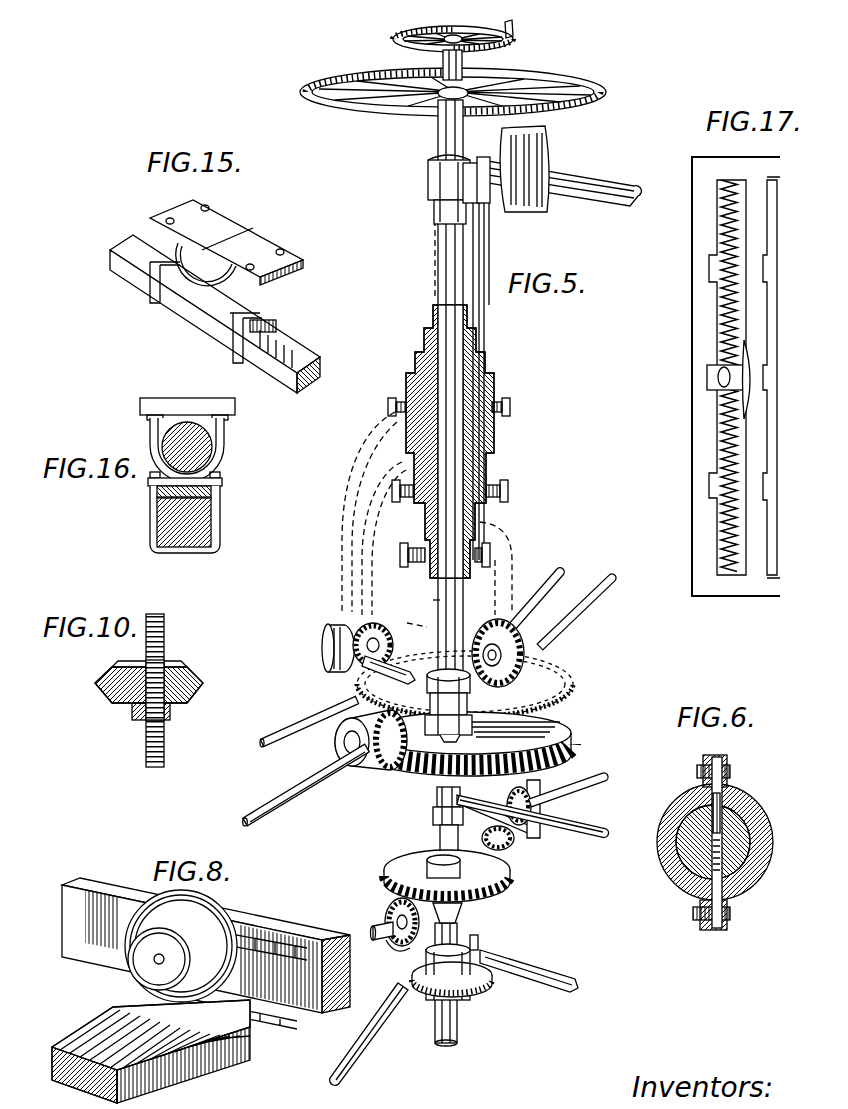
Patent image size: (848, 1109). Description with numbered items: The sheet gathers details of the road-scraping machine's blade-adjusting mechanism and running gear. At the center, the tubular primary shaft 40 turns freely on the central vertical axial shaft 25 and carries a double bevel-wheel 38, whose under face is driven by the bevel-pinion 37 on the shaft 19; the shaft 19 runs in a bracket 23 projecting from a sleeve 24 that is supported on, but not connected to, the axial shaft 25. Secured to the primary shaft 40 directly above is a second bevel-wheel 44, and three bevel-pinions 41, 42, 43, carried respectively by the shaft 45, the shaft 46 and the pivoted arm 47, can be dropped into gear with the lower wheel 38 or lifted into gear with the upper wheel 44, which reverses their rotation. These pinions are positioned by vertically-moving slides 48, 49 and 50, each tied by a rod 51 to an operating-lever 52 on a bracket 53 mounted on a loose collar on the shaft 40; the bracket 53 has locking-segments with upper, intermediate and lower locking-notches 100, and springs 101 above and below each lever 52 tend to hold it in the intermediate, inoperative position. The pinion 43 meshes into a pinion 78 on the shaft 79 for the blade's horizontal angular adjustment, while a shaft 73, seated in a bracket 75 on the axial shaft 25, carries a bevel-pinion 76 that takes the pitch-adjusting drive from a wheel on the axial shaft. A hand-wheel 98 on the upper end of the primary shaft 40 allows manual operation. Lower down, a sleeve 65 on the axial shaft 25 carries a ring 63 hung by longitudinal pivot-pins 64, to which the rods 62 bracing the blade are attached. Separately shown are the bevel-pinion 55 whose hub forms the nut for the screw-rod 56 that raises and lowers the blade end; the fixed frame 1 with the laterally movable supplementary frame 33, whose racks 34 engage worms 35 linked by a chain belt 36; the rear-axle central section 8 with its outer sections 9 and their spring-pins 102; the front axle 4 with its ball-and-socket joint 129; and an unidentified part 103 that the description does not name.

In FIG. 5, the hand-wheel 98 is at (405, 36).
In FIG. 5, the operating-lever 52 is at (463, 66).
In FIG. 5, the primary shaft 40 is at (443, 133).
In FIG. 5, the bracket 53 is at (488, 200).
In FIG. 17, the bracket 53 is at (736, 376).
In FIG. 5, the locking-notches 100 is at (540, 138).
In FIG. 17, the locking-notches 100 is at (709, 267).
In FIG. 5, the rod 51 is at (474, 262).
In FIG. 5, the vertically-moving slide 48 is at (490, 412).
In FIG. 5, the vertically-moving slide 50 is at (490, 460).
In FIG. 5, the vertically-moving slide 49 is at (488, 518).
In FIG. 5, the central vertical axial shaft 25 is at (440, 834).
In FIG. 5, the shaft 79 is at (545, 578).
In FIG. 5, the shaft 46 is at (590, 596).
In FIG. 5, the bevel-pinion 43 is at (378, 633).
In FIG. 5, the pinion 78 is at (334, 672).
In FIG. 5, the pivoted arm 47 is at (410, 668).
In FIG. 5, the bevel-pinion 42 is at (519, 670).
In FIG. 5, the bevel-wheel 44 is at (568, 680).
In FIG. 5, the bevel-pinion 41 is at (398, 742).
In FIG. 5, the shaft 45 is at (306, 785).
In FIG. 5, the double bevel-wheel 38 is at (562, 736).
In FIG. 5, the sleeve 24 is at (437, 796).
In FIG. 5, the bevel-pinion 37 is at (507, 798).
In FIG. 5, the bevel-pinion 76 is at (486, 834).
In FIG. 5, the bracket 23 is at (538, 834).
In FIG. 5, the shaft 73 is at (598, 790).
In FIG. 5, the shaft 19 is at (535, 817).
In FIG. 5, the bracket 75 is at (395, 953).
In FIG. 5, the sleeve 65 is at (474, 950).
In FIG. 5, the longitudinal pivot-pins 64 is at (432, 964).
In FIG. 5, the ring 63 is at (478, 994).
In FIG. 5, the rod 62 is at (364, 1062).
In FIG. 15, the front axle 4 is at (215, 314).
In FIG. 16, the front axle 4 is at (222, 520).
In FIG. 15, the ball-and-socket joint 129 is at (200, 287).
In FIG. 16, the ball-and-socket joint 129 is at (226, 450).
In FIG. 10, the screw-rod 56 is at (165, 642).
In FIG. 10, the bevel-pinion 55 is at (162, 690).
In FIG. 8, the fixed frame 1 is at (108, 890).
In FIG. 8, the worms 35 is at (181, 945).
In FIG. 8, the chain belt 36 is at (233, 975).
In FIG. 8, the supplementary frame 33 is at (151, 1051).
In FIG. 8, the racks 34 is at (99, 1014).
In FIG. 17, the springs 101 is at (733, 226).
In FIG. 6, the central section 8 is at (707, 842).
In FIG. 6, the outer sections 9 is at (758, 843).
In FIG. 6, the boss 103 is at (700, 777).
In FIG. 6, the spring-pins 102 is at (733, 796).